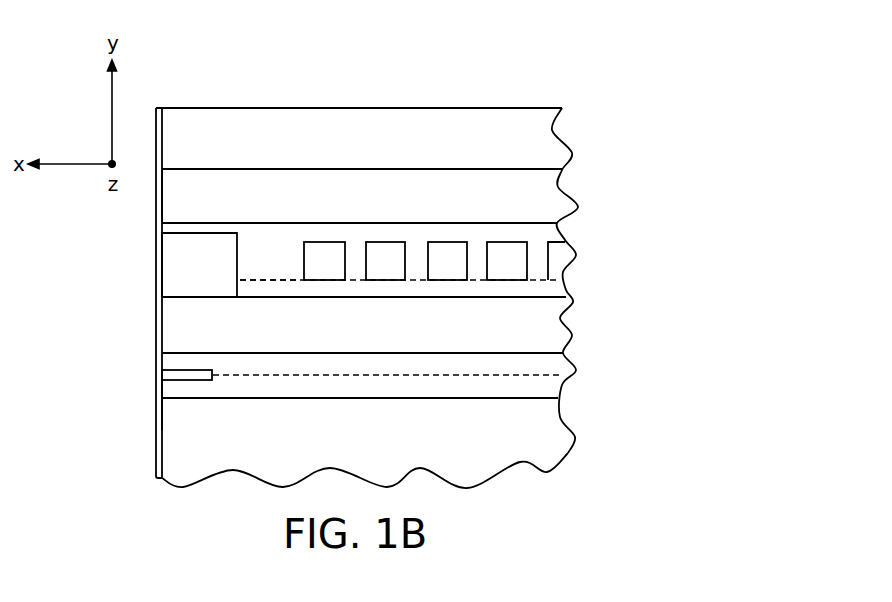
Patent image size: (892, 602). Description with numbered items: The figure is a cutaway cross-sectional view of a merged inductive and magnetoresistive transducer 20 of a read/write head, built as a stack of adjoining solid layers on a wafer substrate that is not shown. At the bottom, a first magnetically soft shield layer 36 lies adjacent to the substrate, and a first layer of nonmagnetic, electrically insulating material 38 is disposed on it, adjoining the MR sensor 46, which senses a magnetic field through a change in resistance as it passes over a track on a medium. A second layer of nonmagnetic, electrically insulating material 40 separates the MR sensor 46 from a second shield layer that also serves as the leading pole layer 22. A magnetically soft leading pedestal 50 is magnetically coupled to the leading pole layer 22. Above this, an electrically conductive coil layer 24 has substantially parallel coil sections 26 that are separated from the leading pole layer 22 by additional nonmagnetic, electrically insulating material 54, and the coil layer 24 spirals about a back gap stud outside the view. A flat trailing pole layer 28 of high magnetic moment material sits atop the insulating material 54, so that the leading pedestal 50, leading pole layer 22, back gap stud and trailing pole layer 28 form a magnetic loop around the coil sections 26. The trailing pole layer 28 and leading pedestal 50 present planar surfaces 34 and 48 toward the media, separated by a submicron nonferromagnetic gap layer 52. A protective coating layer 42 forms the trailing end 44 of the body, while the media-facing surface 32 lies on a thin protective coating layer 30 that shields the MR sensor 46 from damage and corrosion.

The merged inductive and magnetoresistive transducer 20 is at (419, 51).
The leading pole layer 22 is at (541, 322).
The coil layer 24 is at (580, 273).
The coil sections 26 is at (512, 268).
The trailing pole layer 28 is at (550, 203).
The thin protective coating layer 30 is at (157, 435).
The media-facing surface 32 is at (146, 403).
The trailing pole tip surface 34 is at (170, 204).
The first magnetically soft shield layer 36 is at (542, 447).
The first layer of nonmagnetic, electrically insulating material 38 is at (570, 383).
The second layer of nonmagnetic, electrically insulating material 40 is at (555, 361).
The protective coating layer 42 is at (541, 153).
The trailing end 44 is at (520, 100).
The MR sensor 46 is at (173, 375).
The pole tip surface 48 is at (175, 278).
The leading pedestal 50 is at (180, 255).
The nonferromagnetic gap layer 52 is at (170, 228).
The nonmagnetic, electrically insulating material 54 is at (287, 288).